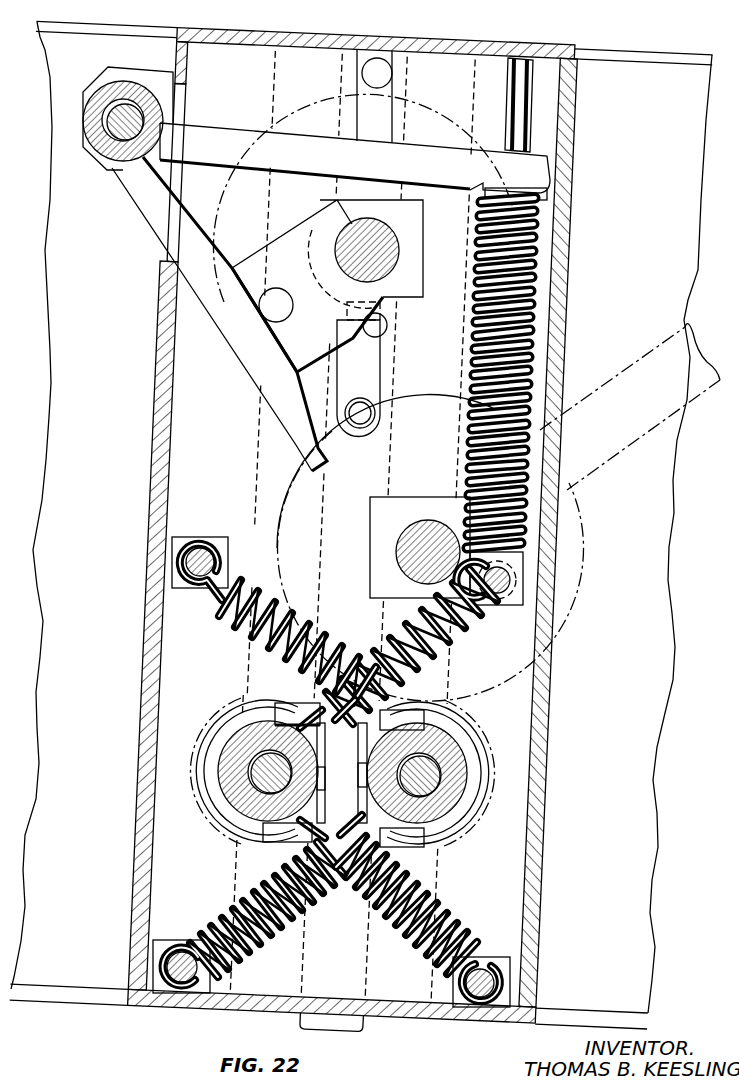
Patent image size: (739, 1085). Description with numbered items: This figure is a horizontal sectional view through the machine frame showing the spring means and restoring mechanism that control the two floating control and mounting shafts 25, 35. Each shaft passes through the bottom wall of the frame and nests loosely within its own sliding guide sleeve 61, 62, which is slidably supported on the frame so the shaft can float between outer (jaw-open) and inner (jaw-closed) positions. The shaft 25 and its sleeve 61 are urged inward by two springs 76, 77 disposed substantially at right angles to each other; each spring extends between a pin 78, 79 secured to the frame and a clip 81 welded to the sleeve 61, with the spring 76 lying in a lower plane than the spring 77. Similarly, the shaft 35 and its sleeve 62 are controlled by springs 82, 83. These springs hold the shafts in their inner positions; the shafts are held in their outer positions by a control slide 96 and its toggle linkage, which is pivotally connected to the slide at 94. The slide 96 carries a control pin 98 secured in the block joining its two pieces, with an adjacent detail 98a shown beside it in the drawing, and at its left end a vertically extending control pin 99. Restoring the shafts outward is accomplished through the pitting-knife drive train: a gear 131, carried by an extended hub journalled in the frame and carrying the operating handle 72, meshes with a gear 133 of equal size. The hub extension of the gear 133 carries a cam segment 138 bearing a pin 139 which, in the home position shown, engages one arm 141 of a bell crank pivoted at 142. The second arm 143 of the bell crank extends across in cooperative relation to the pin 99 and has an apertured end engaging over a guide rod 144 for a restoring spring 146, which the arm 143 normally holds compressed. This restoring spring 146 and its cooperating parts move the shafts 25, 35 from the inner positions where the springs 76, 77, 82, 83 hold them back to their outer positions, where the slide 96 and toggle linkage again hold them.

The shaft 25 is at (248, 832).
The shaft 35 is at (422, 760).
The floating guide sleeve 61 is at (250, 790).
The floating guide sleeve 62 is at (455, 843).
The operating handle 72 is at (582, 488).
The spring 76 is at (440, 660).
The spring 77 is at (449, 913).
The pin 78 is at (498, 596).
The pin 79 is at (510, 960).
The clip 81 is at (278, 700).
The spring 82 is at (250, 640).
The spring 83 is at (222, 900).
The pivot 94 is at (372, 400).
The control slide 96 is at (388, 395).
The control pin 98 is at (370, 336).
The slot 98a is at (383, 318).
The control pin 99 is at (362, 73).
The gear 131 is at (574, 620).
The gear 133 is at (463, 130).
The cam segment 138 is at (282, 240).
The pin 139 is at (300, 292).
The arm 141 is at (255, 378).
The pivot 142 is at (127, 140).
The arm 143 is at (268, 124).
The guide rod 144 is at (507, 138).
The restoring spring 146 is at (480, 322).